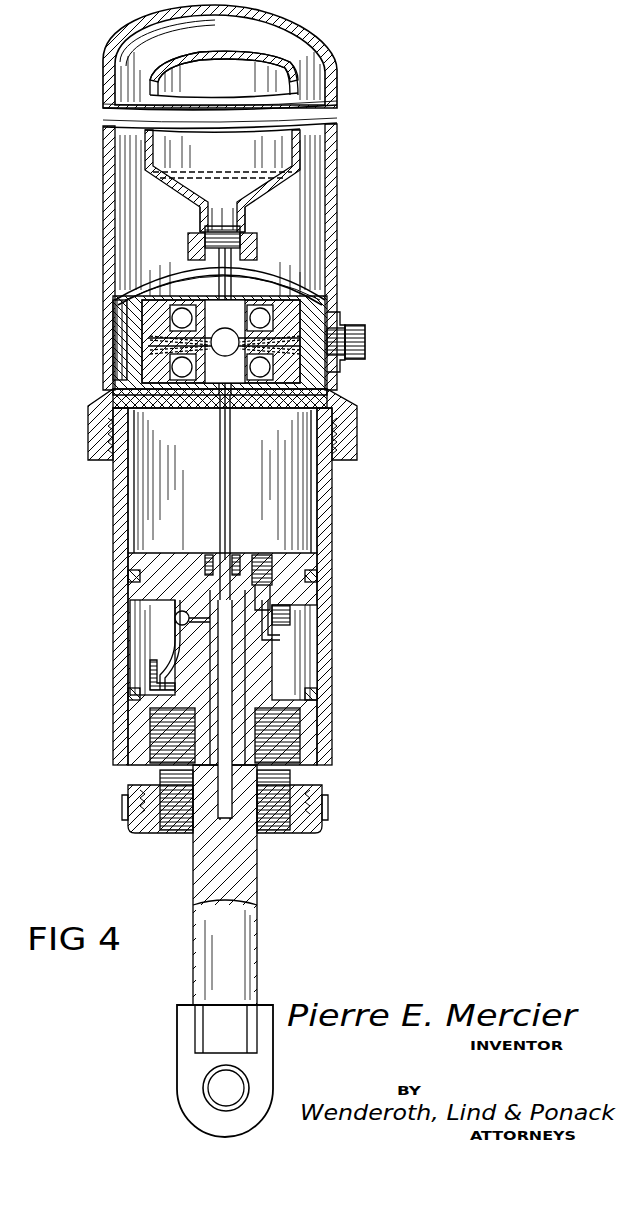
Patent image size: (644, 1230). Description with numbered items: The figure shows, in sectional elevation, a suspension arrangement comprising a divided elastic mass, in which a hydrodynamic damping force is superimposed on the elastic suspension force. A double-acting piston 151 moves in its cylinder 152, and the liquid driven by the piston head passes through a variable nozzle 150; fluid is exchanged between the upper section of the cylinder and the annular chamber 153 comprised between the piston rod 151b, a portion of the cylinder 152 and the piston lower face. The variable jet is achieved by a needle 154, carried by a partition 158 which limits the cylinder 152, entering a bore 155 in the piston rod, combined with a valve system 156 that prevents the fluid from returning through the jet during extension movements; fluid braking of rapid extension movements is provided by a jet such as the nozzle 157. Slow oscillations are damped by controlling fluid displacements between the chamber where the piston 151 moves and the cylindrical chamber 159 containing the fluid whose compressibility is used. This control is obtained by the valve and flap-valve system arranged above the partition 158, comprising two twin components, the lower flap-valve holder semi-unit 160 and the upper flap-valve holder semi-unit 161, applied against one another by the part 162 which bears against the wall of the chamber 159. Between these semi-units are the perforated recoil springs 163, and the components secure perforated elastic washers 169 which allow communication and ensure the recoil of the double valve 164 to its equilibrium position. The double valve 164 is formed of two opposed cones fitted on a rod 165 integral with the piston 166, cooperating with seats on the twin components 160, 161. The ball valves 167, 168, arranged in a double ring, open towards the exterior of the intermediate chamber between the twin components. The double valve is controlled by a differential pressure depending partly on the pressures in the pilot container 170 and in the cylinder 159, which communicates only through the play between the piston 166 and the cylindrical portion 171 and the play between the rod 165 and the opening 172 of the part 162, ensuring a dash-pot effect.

The variable nozzle 150 is at (215, 577).
The piston 151 is at (150, 594).
The piston rod 151b is at (242, 692).
The cylinder 152 is at (122, 655).
The annular chamber 153 is at (142, 676).
The needle 154 is at (232, 470).
The bore 155 is at (225, 737).
The valve system 156 is at (178, 621).
The nozzle 157 is at (256, 561).
The partition 158 is at (160, 403).
The cylindrical chamber 159 is at (318, 178).
The lower flap-valve holder semi-unit 160 is at (277, 363).
The upper flap-valve holder semi-unit 161 is at (290, 327).
The part 162 is at (165, 288).
The perforated recoil springs 163 is at (200, 347).
The double valve 164 is at (203, 353).
The rod 165 is at (229, 297).
The piston 166 is at (232, 232).
The ball valve 167 is at (262, 383).
The ball valve 168 is at (292, 318).
The elastic washer 169 is at (333, 338).
The pilot container 170 is at (297, 148).
The cylindrical portion 171 is at (200, 213).
The opening 172 is at (236, 268).